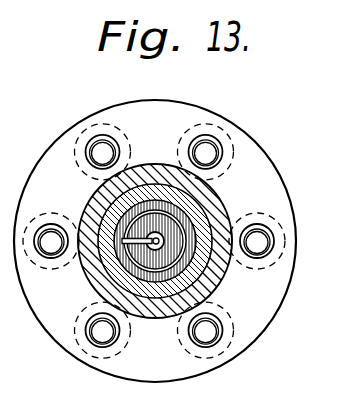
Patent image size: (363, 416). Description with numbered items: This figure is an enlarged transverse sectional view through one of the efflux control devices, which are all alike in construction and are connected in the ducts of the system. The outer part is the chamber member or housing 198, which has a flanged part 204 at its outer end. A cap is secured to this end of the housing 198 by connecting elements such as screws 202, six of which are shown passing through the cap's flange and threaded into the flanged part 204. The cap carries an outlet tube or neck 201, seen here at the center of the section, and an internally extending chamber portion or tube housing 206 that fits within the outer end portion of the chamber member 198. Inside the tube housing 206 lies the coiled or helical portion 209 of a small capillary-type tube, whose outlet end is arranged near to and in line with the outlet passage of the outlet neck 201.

The chamber member or housing 198 is at (222, 290).
The outlet tube or neck 201 is at (161, 236).
The screws 202 is at (197, 141).
The flanged part 204 is at (282, 192).
The chamber portion or tube housing 206 is at (92, 268).
The coiled or helical portion 209 is at (118, 208).